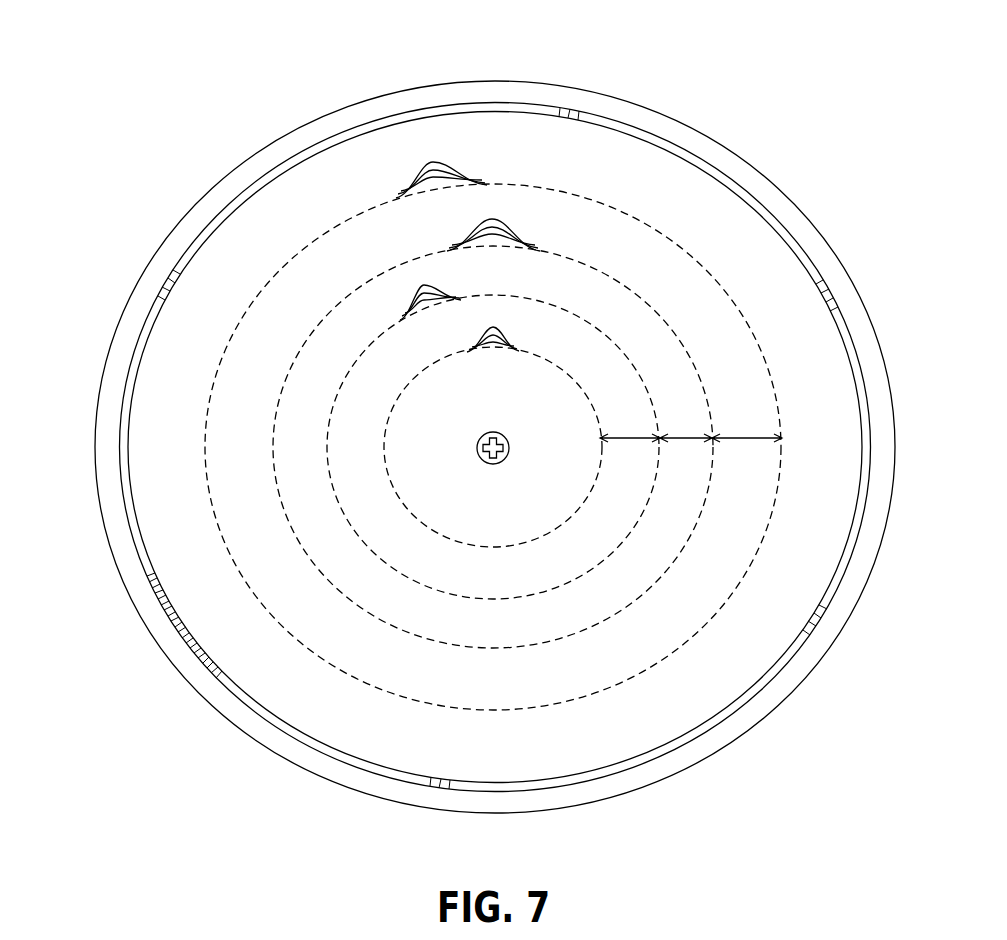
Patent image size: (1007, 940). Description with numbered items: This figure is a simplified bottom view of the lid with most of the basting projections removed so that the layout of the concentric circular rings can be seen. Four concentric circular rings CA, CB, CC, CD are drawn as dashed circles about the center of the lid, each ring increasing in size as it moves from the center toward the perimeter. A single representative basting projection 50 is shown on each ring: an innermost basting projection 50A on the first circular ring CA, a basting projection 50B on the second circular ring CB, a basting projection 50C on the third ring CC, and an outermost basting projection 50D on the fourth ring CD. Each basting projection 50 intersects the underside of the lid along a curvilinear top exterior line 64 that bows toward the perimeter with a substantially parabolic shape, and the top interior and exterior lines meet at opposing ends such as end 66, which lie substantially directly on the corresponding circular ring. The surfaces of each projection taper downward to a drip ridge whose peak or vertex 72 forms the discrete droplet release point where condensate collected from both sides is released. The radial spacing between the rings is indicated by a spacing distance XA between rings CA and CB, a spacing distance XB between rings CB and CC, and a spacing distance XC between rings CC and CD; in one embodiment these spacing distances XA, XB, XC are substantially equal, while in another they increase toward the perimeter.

The basting projection 50 is at (670, 184).
The innermost circular array basting projection 50A is at (500, 330).
The second circular array basting projection 50B is at (442, 285).
The third circular array basting projection 50C is at (503, 222).
The fourth circular array basting projection 50D is at (450, 165).
The top exterior line 64 is at (397, 198).
The opposing end 66 is at (487, 187).
The vertex 72 is at (413, 292).
The first circular ring CA is at (387, 463).
The second circular ring CB is at (372, 550).
The third circular ring CC is at (353, 603).
The fourth circular ring CD is at (363, 685).
The spacing distance XA is at (630, 423).
The spacing distance XB is at (686, 423).
The spacing distance XC is at (747, 423).